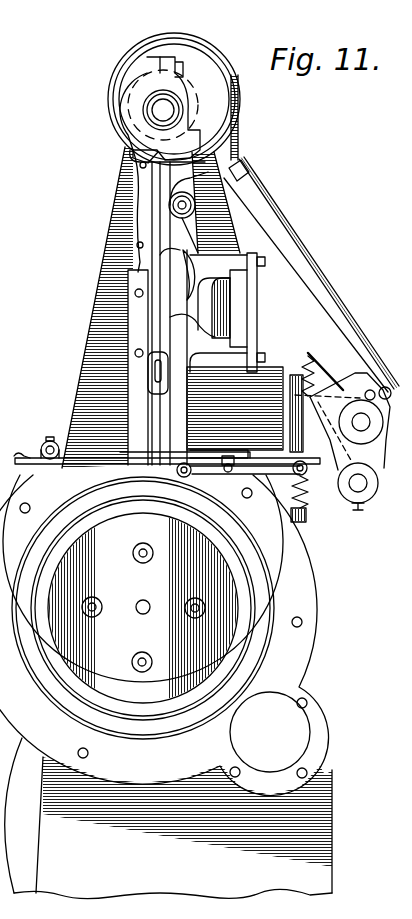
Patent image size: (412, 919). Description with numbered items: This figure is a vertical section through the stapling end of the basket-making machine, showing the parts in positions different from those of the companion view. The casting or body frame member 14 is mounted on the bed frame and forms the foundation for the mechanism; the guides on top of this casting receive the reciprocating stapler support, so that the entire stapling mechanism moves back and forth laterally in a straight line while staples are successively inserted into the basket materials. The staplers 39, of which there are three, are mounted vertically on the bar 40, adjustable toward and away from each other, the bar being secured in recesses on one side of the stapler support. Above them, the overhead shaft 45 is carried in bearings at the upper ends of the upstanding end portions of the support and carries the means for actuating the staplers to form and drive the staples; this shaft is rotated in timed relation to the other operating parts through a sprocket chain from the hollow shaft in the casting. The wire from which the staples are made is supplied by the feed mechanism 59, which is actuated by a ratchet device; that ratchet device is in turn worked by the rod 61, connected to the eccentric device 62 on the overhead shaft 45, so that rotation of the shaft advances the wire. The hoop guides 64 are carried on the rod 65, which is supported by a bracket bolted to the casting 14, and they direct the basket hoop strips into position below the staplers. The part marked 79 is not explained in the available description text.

The base 14 is at (336, 852).
The cam 39 is at (187, 292).
The bracket 40 is at (240, 305).
The pulley hub shaft 45 is at (160, 112).
The idler pulley bracket 59 is at (360, 410).
The belt 61 is at (290, 225).
The drive pulley 62 is at (228, 117).
The platform bar 64 is at (20, 462).
The link pivot 65 is at (60, 440).
The bar end 79 is at (15, 430).